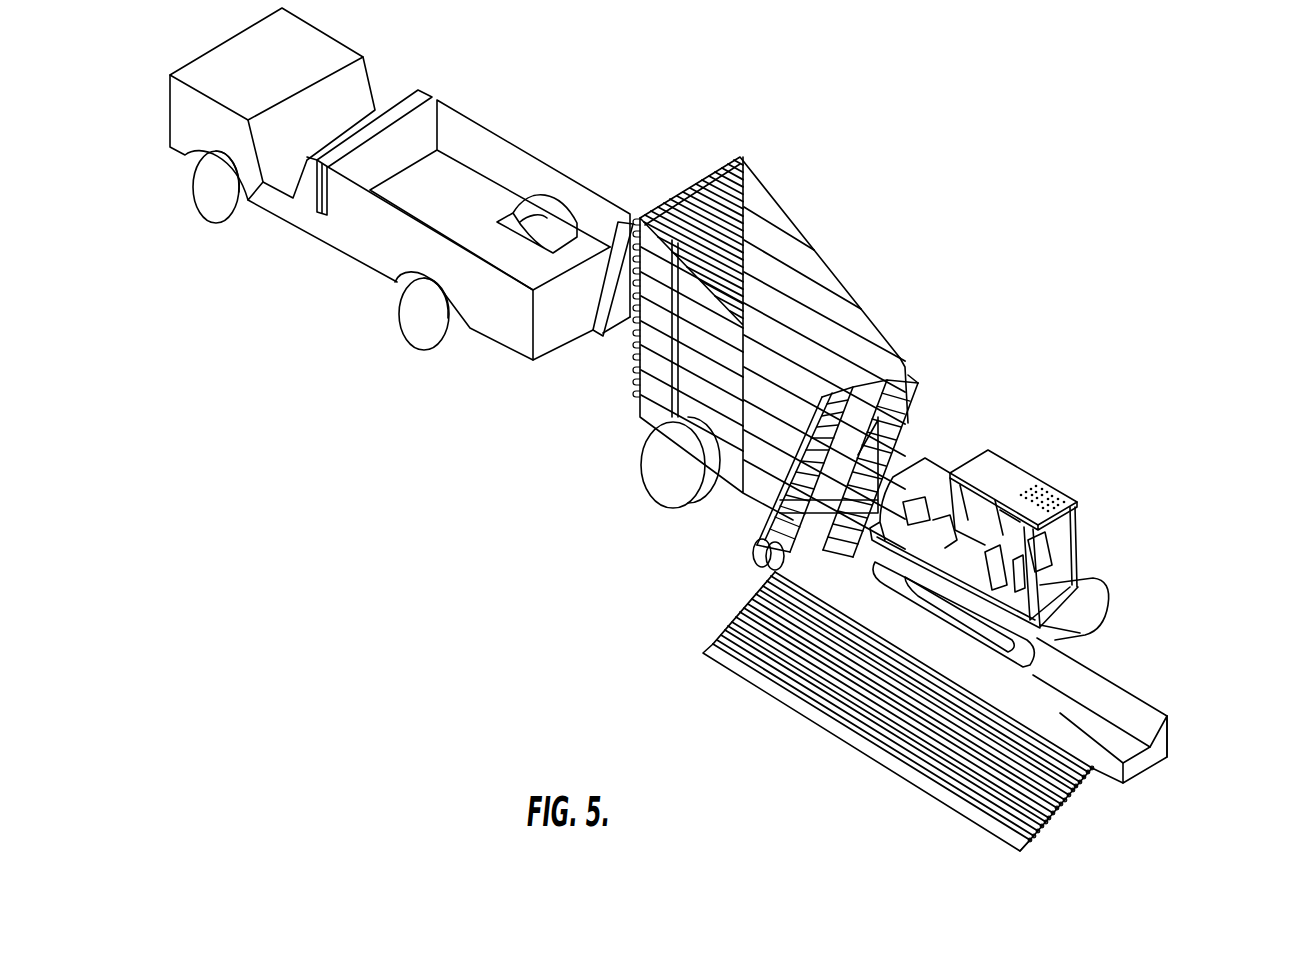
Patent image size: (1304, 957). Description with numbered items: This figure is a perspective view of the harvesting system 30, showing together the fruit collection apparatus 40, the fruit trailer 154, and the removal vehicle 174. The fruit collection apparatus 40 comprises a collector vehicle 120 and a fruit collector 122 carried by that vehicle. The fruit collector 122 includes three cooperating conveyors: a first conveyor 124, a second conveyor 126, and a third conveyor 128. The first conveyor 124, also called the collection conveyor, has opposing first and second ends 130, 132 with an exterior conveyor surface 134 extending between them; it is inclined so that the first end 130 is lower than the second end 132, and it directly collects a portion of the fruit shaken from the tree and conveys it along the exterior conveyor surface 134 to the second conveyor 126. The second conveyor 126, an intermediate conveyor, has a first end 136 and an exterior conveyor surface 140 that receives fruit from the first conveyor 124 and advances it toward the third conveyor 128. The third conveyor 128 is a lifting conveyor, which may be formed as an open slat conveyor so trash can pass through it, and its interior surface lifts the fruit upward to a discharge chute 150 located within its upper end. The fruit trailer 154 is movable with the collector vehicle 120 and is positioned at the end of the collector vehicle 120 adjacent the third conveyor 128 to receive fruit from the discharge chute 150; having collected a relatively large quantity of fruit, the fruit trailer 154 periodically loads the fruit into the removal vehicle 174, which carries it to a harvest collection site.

The harvesting system 30 is at (769, 296).
The fruit collection apparatus 40 is at (1041, 537).
The collector vehicle 120 is at (1095, 581).
The fruit collector 122 is at (943, 738).
The first conveyor 124 is at (707, 668).
The second conveyor 126 is at (1177, 718).
The third conveyor 128 is at (917, 375).
The first end 130 is at (1013, 842).
The second end 132 is at (1097, 767).
The exterior conveyor surface 134 is at (1045, 823).
The first end 136 is at (1142, 768).
The exterior conveyor surface 140 is at (1152, 733).
The discharge chute 150 is at (890, 440).
The fruit trailer 154 is at (785, 210).
The removal vehicle 174 is at (505, 338).